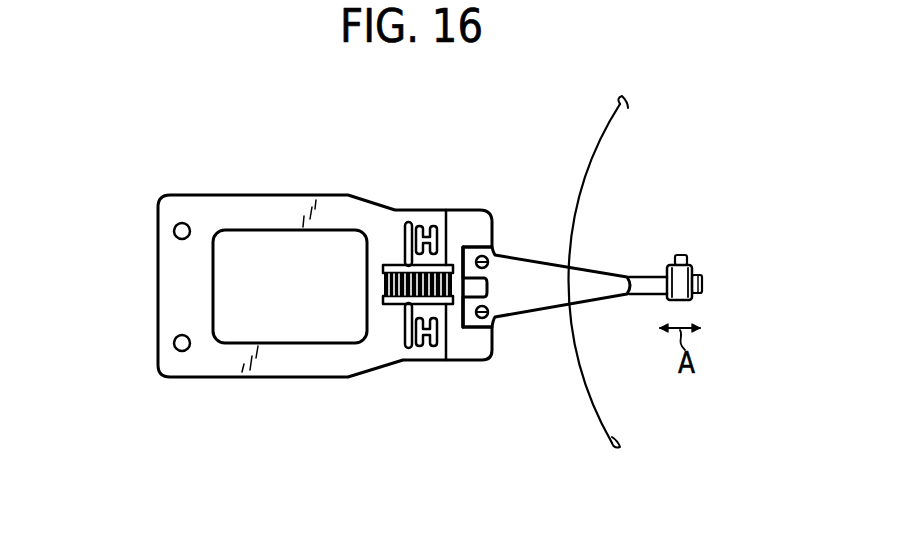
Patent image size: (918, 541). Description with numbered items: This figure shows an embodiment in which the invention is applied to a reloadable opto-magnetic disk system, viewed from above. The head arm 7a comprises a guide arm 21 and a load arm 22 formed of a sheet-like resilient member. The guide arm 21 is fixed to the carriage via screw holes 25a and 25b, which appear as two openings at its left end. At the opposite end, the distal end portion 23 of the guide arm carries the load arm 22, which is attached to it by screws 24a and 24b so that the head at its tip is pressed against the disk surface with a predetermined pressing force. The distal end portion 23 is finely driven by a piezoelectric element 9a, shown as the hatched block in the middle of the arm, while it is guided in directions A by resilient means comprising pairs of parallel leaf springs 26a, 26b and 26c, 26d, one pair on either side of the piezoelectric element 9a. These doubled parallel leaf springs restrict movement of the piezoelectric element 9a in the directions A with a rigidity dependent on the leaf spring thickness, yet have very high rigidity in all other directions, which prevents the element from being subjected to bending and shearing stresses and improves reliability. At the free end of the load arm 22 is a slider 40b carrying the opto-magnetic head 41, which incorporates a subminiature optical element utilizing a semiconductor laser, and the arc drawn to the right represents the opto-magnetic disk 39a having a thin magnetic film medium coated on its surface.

The head arm 7a is at (553, 142).
The piezoelectric element 9a is at (450, 216).
The guide arm 21 is at (190, 380).
The load arm 22 is at (540, 295).
The distal end portion of the guide arm 23 is at (470, 345).
The screw 24a is at (484, 247).
The screw 24b is at (484, 325).
The screw hole 25a is at (174, 233).
The screw hole 25b is at (174, 343).
The parallel leaf spring 26a is at (404, 245).
The parallel leaf spring 26b is at (429, 227).
The parallel leaf spring 26c is at (404, 328).
The parallel leaf spring 26d is at (430, 348).
The opto-magnetic disk 39a is at (598, 428).
The slider 40b is at (693, 268).
The opto-magnetic head 41 is at (682, 255).